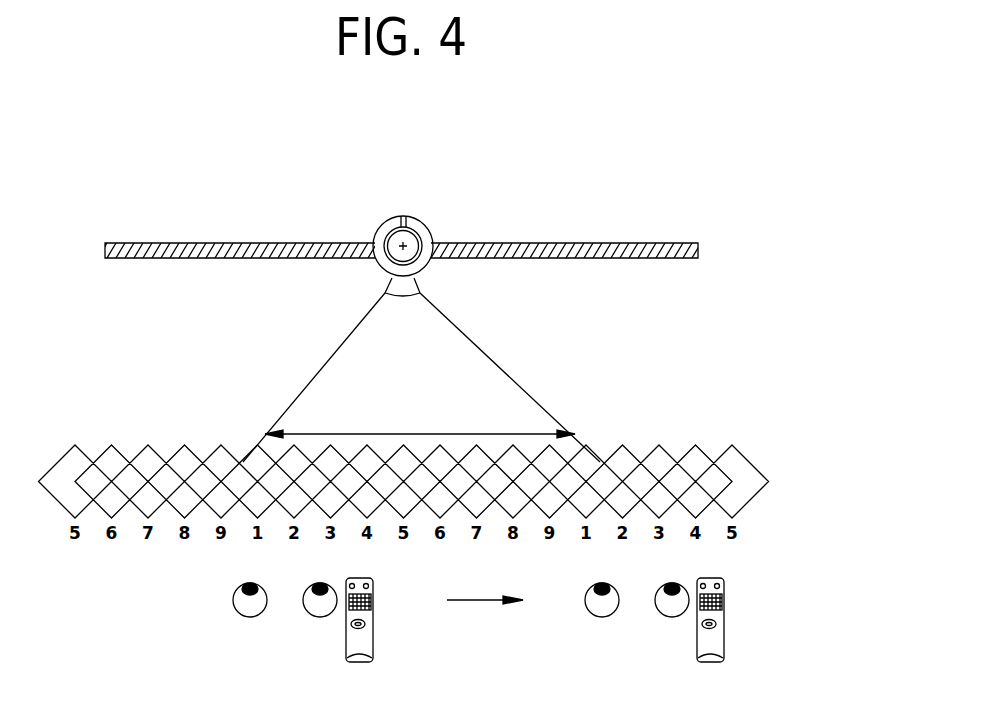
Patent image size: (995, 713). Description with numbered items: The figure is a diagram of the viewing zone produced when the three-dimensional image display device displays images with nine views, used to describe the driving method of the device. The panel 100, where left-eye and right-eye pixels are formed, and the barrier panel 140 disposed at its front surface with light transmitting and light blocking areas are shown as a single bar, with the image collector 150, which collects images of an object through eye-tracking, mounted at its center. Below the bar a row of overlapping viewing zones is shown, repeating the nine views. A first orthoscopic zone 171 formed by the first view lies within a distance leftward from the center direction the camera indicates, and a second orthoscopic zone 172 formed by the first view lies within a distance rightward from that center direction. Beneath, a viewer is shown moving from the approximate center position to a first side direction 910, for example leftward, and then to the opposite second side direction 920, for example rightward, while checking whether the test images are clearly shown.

The panel 100 is at (407, 231).
The barrier panel 140 is at (595, 242).
The image collector 150 is at (411, 217).
The first orthoscopic zone 171 is at (247, 455).
The second orthoscopic zone 172 is at (598, 453).
The first side direction 910 is at (258, 613).
The second side direction 920 is at (610, 613).